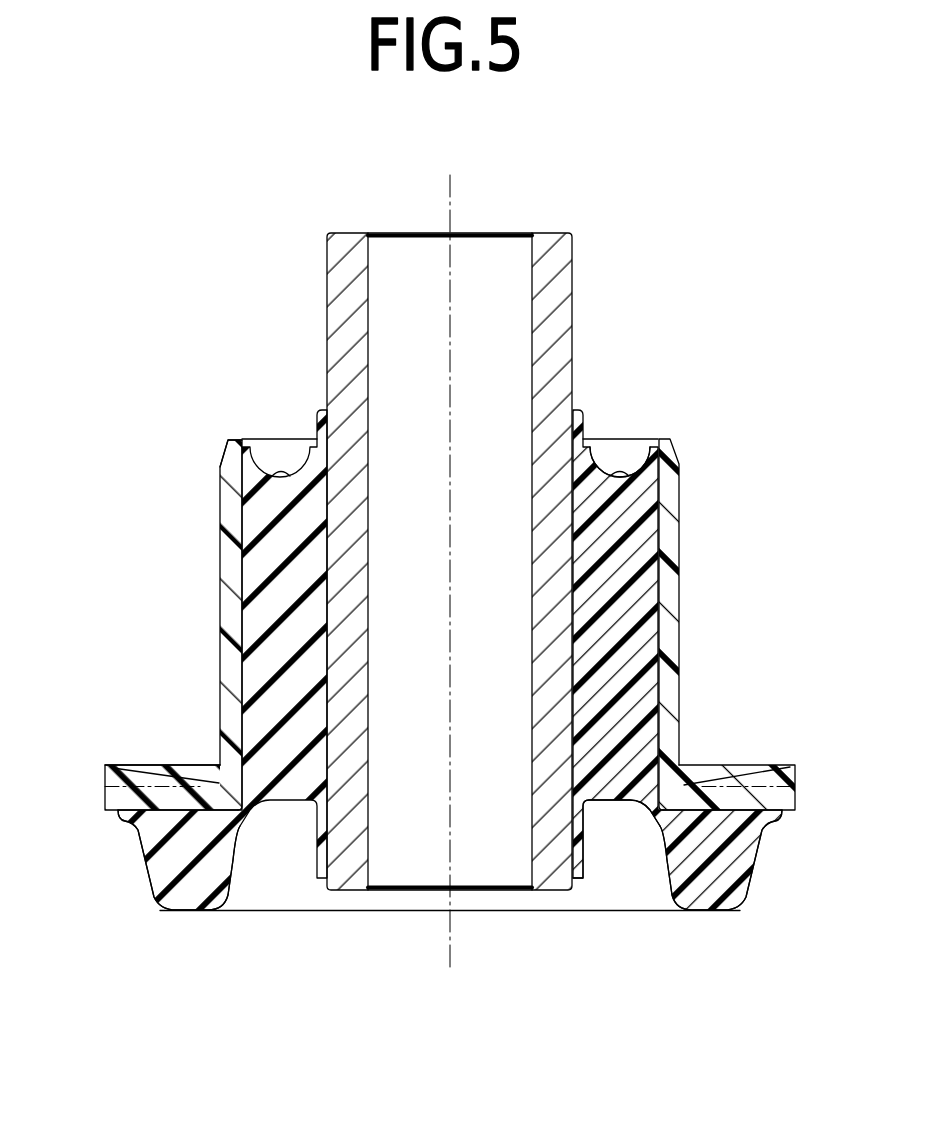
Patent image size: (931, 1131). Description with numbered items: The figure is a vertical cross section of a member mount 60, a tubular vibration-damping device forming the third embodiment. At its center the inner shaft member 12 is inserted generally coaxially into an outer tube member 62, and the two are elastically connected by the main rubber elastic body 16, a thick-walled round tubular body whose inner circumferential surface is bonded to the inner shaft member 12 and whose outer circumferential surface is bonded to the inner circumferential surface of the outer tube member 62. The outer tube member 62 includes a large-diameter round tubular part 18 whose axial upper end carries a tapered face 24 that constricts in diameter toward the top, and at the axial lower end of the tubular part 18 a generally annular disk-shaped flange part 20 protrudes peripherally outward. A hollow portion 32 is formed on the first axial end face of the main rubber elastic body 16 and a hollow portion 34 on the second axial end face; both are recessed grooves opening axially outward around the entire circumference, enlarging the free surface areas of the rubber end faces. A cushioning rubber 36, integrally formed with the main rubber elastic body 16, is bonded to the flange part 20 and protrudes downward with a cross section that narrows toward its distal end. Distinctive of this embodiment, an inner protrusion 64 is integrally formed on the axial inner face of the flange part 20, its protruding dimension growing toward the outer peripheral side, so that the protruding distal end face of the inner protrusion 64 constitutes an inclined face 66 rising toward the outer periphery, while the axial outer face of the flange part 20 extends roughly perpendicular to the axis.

The inner shaft member 12 is at (578, 281).
The main rubber elastic body 16 is at (615, 680).
The tubular part 18 is at (232, 608).
The flange part 20 is at (171, 798).
The tapered face 24 is at (227, 450).
The hollow portion 32 is at (624, 472).
The hollow portion 34 is at (589, 802).
The cushioning rubber 36 is at (713, 867).
The member mount 60 is at (688, 345).
The outer tube member 62 is at (687, 592).
The inner protrusion 64 is at (118, 777).
The inclined face 66 is at (147, 770).